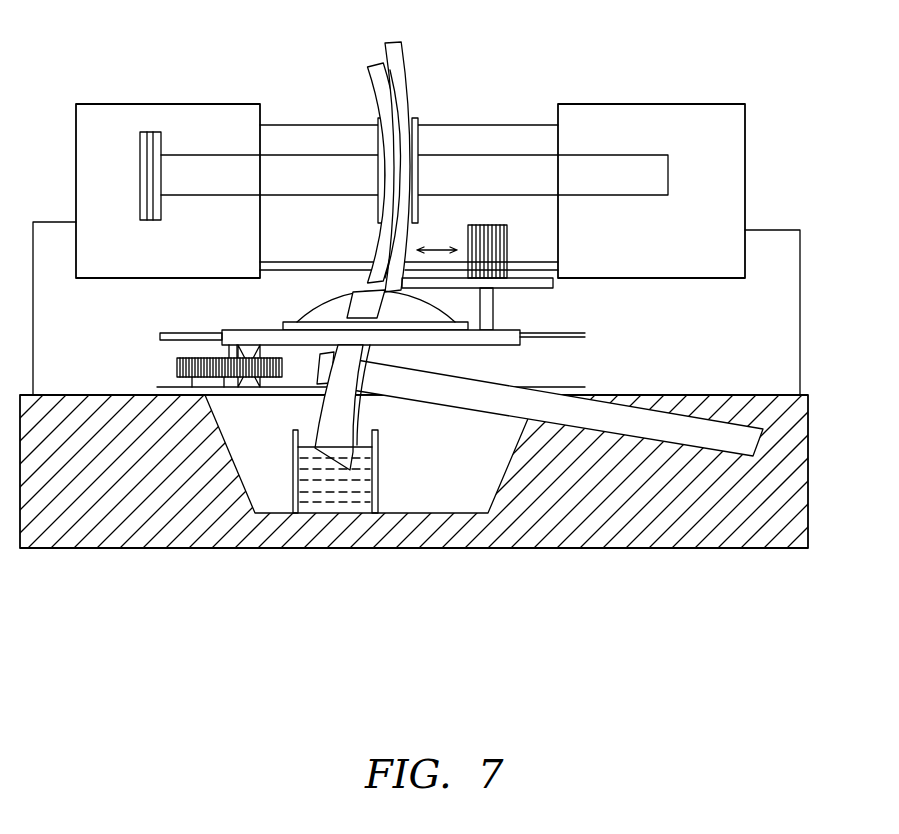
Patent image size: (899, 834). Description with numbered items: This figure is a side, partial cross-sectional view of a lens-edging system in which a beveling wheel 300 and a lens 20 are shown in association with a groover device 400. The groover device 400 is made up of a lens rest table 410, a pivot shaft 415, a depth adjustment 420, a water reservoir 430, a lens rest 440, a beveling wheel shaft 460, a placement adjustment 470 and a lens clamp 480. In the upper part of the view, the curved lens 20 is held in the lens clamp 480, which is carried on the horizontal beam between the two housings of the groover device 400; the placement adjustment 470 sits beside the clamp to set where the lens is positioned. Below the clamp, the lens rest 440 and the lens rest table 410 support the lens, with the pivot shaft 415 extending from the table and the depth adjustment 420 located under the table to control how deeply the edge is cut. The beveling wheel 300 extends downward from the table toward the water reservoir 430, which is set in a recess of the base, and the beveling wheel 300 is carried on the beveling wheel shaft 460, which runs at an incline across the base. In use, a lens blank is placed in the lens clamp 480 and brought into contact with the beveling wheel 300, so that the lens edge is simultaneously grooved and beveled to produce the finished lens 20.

The lens 20 is at (372, 87).
The beveling wheel 300 is at (327, 405).
The groover device 400 is at (858, 206).
The lens rest table 410 is at (234, 330).
The pivot shaft 415 is at (185, 341).
The depth adjustment 420 is at (190, 378).
The water reservoir 430 is at (337, 492).
The lens rest 440 is at (402, 308).
The beveling wheel shaft 460 is at (652, 428).
The placement adjustment 470 is at (531, 289).
The lens clamp 480 is at (442, 155).